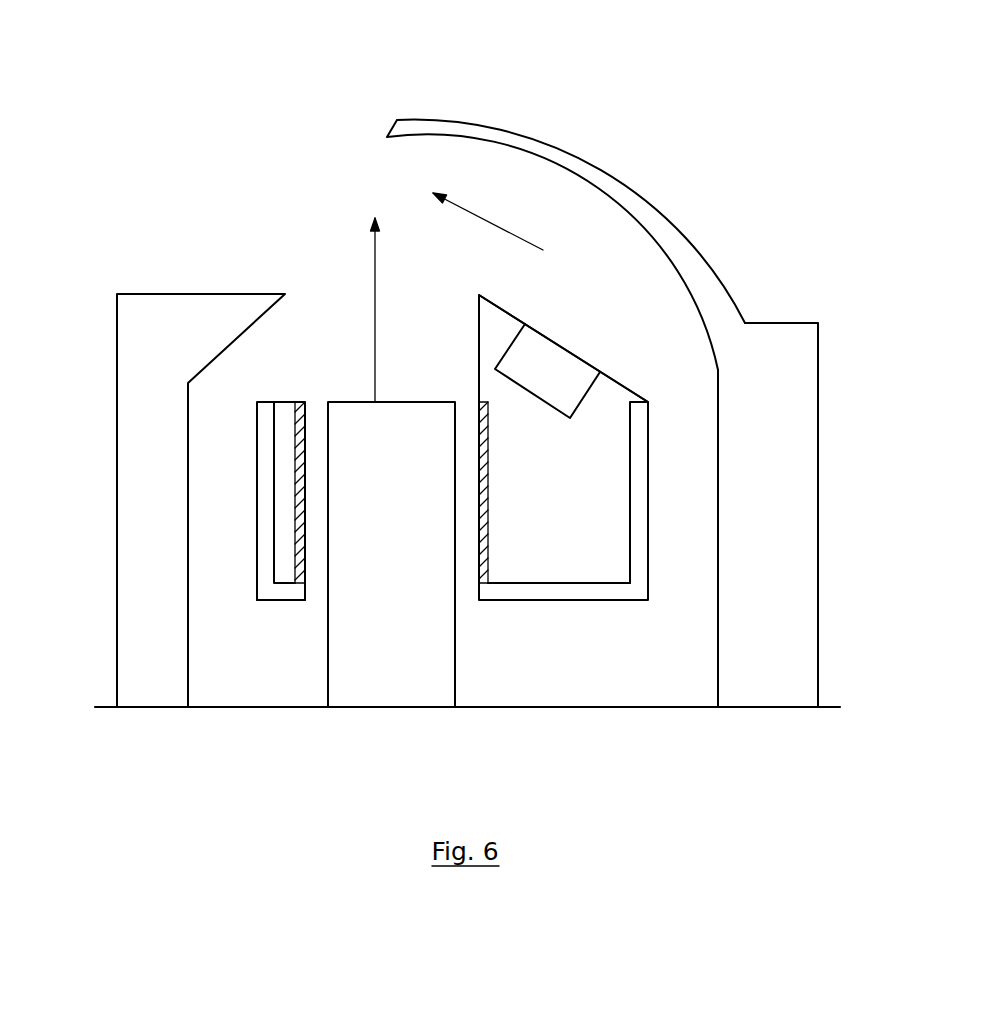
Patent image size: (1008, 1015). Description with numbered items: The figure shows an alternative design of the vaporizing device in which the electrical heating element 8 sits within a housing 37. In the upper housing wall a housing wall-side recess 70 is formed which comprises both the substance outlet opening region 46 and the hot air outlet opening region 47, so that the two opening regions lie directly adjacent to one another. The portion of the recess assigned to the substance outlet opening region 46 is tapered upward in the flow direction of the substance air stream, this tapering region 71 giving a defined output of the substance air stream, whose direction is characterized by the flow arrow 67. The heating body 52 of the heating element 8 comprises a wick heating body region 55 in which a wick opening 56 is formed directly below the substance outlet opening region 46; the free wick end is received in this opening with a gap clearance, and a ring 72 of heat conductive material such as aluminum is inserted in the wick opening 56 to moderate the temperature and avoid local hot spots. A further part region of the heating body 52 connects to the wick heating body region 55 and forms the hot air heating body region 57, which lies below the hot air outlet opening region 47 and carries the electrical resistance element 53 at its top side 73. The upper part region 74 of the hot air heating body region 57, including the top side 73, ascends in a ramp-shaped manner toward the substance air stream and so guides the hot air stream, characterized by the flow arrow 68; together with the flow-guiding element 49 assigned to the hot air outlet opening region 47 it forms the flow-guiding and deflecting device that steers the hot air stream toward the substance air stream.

The heating element 8 is at (567, 615).
The housing 37 is at (818, 487).
The substance outlet opening region 46 is at (366, 303).
The hot air outlet opening region 47 is at (583, 300).
The flow-guiding element 49 is at (648, 215).
The heating body 52 is at (517, 602).
The electrical resistance element 53 is at (565, 366).
The wick heating body region 55 is at (273, 603).
The wick opening 56 is at (318, 567).
The hot air heating body region 57 is at (548, 521).
The flow arrow 67 is at (368, 345).
The flow arrow 68 is at (472, 213).
The housing wall-side recess 70 is at (408, 238).
The tapering region 71 is at (215, 338).
The ring 72 is at (297, 478).
The top side 73 is at (627, 380).
The upper part region 74 is at (500, 303).